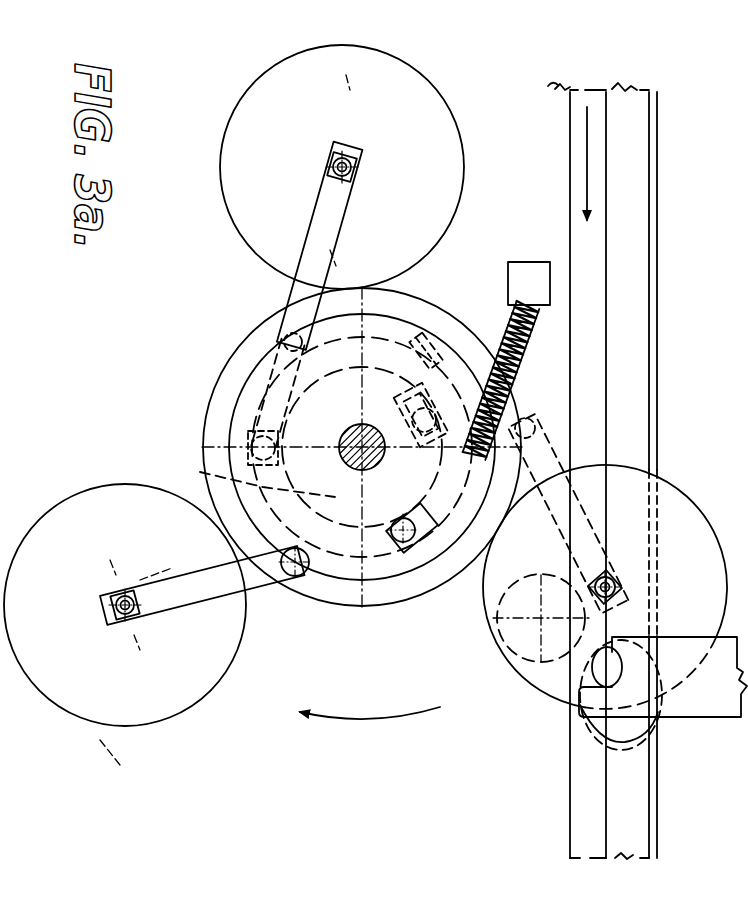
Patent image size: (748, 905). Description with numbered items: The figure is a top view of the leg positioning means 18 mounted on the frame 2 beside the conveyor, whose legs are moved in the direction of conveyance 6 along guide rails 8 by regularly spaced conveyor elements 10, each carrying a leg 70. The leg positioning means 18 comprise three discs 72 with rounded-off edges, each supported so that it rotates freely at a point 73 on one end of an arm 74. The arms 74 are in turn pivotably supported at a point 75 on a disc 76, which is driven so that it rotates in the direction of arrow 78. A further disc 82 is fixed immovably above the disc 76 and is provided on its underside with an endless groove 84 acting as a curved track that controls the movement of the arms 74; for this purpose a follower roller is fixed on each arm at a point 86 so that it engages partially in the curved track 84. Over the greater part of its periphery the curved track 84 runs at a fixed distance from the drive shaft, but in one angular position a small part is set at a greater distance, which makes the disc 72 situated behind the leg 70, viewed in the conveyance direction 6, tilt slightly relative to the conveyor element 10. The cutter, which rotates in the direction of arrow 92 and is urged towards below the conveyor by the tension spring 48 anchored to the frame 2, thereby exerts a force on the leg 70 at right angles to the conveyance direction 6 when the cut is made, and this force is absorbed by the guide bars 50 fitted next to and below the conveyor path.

The frame 2 is at (530, 272).
The direction of conveyance arrow 6 is at (586, 163).
The guide rails 8 is at (585, 813).
The conveyor element 10 is at (703, 703).
The leg positioning means 18 is at (500, 122).
The tension spring 48 is at (540, 338).
The guide bars 50 is at (658, 170).
The leg 70 is at (630, 738).
The discs 72 is at (222, 152).
The point 73 is at (352, 158).
The arms 74 is at (290, 290).
The point 75 is at (275, 330).
The disc 76 is at (378, 592).
The arrow 78 is at (378, 718).
The disc 82 is at (440, 575).
The endless groove 84 is at (200, 472).
The point 86 is at (255, 440).
The arrow 92 is at (546, 558).